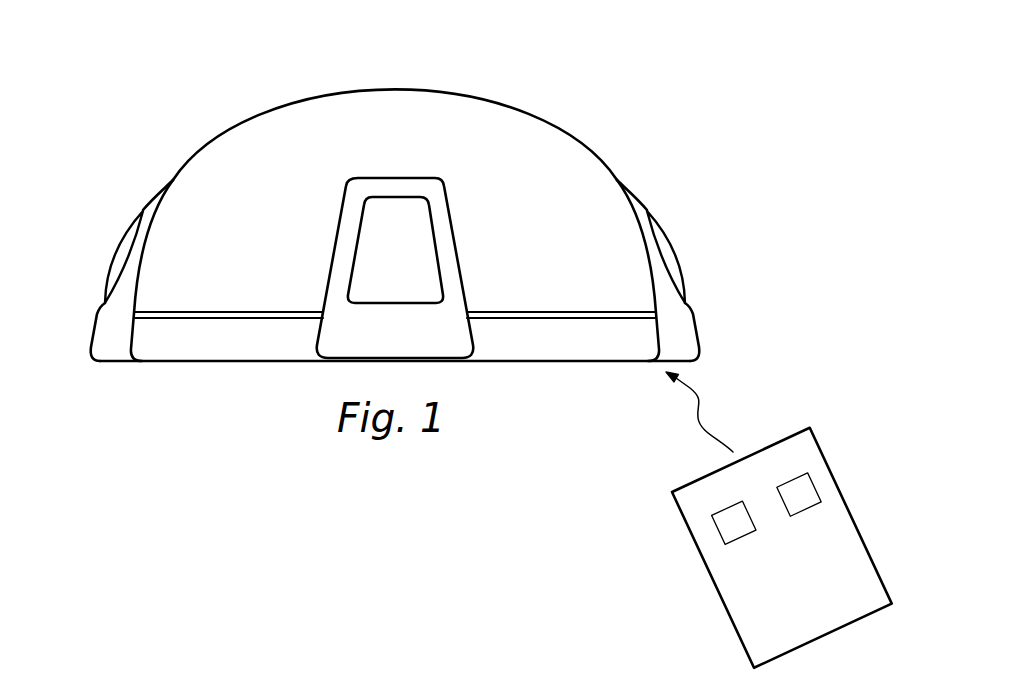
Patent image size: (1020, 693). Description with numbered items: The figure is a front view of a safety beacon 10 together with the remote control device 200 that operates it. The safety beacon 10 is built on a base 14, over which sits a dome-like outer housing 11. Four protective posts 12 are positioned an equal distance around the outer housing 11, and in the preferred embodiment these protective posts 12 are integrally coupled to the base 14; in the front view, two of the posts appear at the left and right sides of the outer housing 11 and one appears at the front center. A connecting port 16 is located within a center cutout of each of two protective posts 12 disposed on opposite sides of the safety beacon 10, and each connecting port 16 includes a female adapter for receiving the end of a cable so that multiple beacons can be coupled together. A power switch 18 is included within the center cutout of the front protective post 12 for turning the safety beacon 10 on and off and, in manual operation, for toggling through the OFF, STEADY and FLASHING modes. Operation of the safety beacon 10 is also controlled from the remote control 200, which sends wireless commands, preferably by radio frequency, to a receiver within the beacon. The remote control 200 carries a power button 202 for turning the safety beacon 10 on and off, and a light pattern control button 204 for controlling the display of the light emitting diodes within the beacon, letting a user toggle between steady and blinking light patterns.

The safety beacon 10 is at (650, 56).
The outer housing 11 is at (307, 99).
The protective posts 12 is at (170, 184).
The base 14 is at (615, 343).
The connecting port 16 is at (117, 251).
The power switch 18 is at (407, 243).
The remote control device 200 is at (720, 600).
The power button 202 is at (715, 530).
The light pattern control button 204 is at (811, 486).